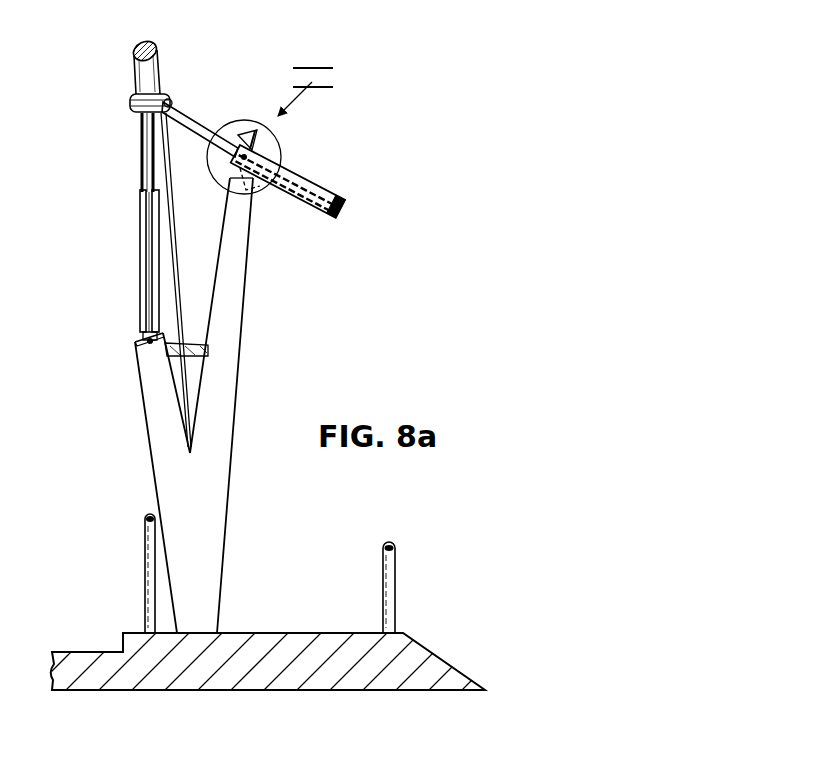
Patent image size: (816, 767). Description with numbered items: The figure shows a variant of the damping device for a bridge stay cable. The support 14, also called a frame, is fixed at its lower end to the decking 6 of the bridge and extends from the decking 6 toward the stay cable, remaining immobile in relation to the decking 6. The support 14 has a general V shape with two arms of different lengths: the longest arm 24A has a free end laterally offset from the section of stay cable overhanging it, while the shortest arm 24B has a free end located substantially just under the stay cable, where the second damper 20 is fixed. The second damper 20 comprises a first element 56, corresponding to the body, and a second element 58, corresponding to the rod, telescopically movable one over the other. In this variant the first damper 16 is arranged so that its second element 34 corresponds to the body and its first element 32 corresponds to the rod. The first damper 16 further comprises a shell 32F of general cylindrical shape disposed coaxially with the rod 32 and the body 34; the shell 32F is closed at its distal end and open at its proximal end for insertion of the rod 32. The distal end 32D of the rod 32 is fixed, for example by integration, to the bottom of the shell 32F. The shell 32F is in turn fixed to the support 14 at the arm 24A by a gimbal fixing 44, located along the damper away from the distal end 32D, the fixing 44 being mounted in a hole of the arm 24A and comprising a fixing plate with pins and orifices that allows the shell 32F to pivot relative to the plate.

The decking 6 is at (447, 657).
The support 14 is at (191, 373).
The first damper 16 is at (268, 140).
The second damper 20 is at (98, 228).
The arm 24A is at (243, 313).
The arm 24B is at (140, 387).
The rod 32 is at (323, 199).
The distal end 32D is at (342, 200).
The shell 32F is at (315, 213).
The body 34 is at (198, 120).
The fixing 44 is at (243, 173).
The first element 56 is at (142, 280).
The second element 58 is at (143, 175).